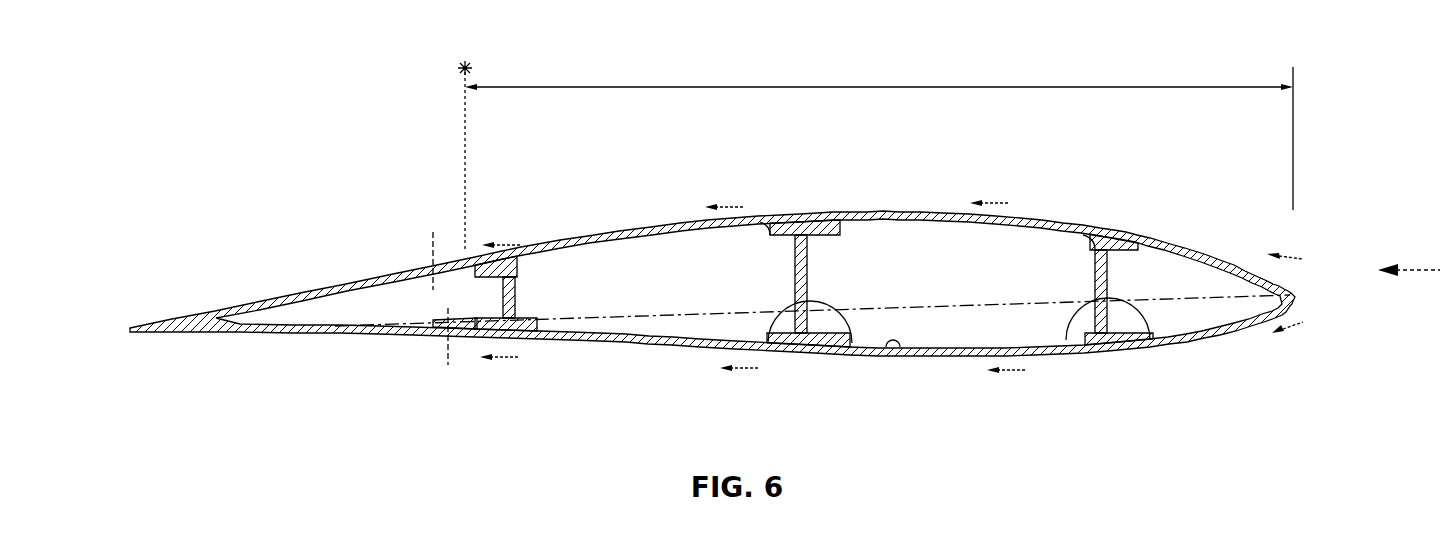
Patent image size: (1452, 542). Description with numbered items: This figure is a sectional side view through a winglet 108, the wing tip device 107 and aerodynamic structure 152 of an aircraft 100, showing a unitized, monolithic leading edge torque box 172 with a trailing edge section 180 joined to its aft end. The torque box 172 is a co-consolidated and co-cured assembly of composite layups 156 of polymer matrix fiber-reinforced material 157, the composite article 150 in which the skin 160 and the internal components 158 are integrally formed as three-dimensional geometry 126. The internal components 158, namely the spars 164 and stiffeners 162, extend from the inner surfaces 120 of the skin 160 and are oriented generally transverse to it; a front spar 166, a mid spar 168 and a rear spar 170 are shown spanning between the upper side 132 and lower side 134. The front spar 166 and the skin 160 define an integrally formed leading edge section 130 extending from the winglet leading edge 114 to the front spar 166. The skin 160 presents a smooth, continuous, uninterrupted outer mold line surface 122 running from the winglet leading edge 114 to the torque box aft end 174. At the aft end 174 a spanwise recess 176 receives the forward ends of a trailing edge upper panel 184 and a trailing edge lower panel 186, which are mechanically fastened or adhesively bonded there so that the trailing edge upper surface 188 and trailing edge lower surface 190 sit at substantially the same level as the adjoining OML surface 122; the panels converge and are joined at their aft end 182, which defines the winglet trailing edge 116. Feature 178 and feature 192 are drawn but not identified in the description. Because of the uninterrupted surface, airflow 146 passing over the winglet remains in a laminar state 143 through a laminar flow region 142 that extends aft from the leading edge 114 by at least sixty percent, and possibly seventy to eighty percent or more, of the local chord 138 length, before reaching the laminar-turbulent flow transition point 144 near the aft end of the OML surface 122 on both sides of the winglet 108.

The aircraft 100 is at (1045, 216).
The wing tip device 107 is at (1240, 252).
The winglet 108 is at (1112, 230).
The winglet leading edge 114 is at (1298, 297).
The winglet trailing edge 116 is at (128, 334).
The inner surfaces 120 is at (867, 222).
The outer mold line surface 122 is at (920, 213).
The three-dimensional geometry 126 is at (770, 218).
The leading edge section 130 is at (1208, 347).
The upper side 132 is at (604, 232).
The lower side 134 is at (598, 345).
The local chord 138 is at (670, 350).
The laminar flow region 142 is at (808, 87).
The laminar state 143 is at (513, 243).
The laminar-turbulent flow transition point 144 is at (470, 67).
The airflow 146 is at (1420, 264).
The composite article 150 is at (1185, 236).
The aerodynamic structure 152 is at (1253, 338).
The composite layups 156 is at (540, 342).
The polymer matrix fiber-reinforced material 157 is at (818, 213).
The internal component 158 is at (517, 280).
The skin 160 is at (653, 225).
The stiffeners 162 is at (1092, 246).
The spars 164 is at (794, 260).
The front spar 166 is at (1150, 334).
The mid spar 168 is at (853, 346).
The rear spar 170 is at (517, 296).
The leading edge torque box 172 is at (968, 355).
The torque box aft end 174 is at (470, 342).
The recess 176 is at (385, 272).
The fastener centerline 178 is at (432, 248).
The trailing edge section 180 is at (177, 318).
The aft end 182 is at (137, 327).
The trailing edge upper panel 184 is at (457, 258).
The trailing edge lower panel 186 is at (248, 303).
The trailing edge upper surface 188 is at (245, 337).
The trailing edge lower surface 190 is at (310, 287).
The lower trailing edge panel 192 is at (312, 337).